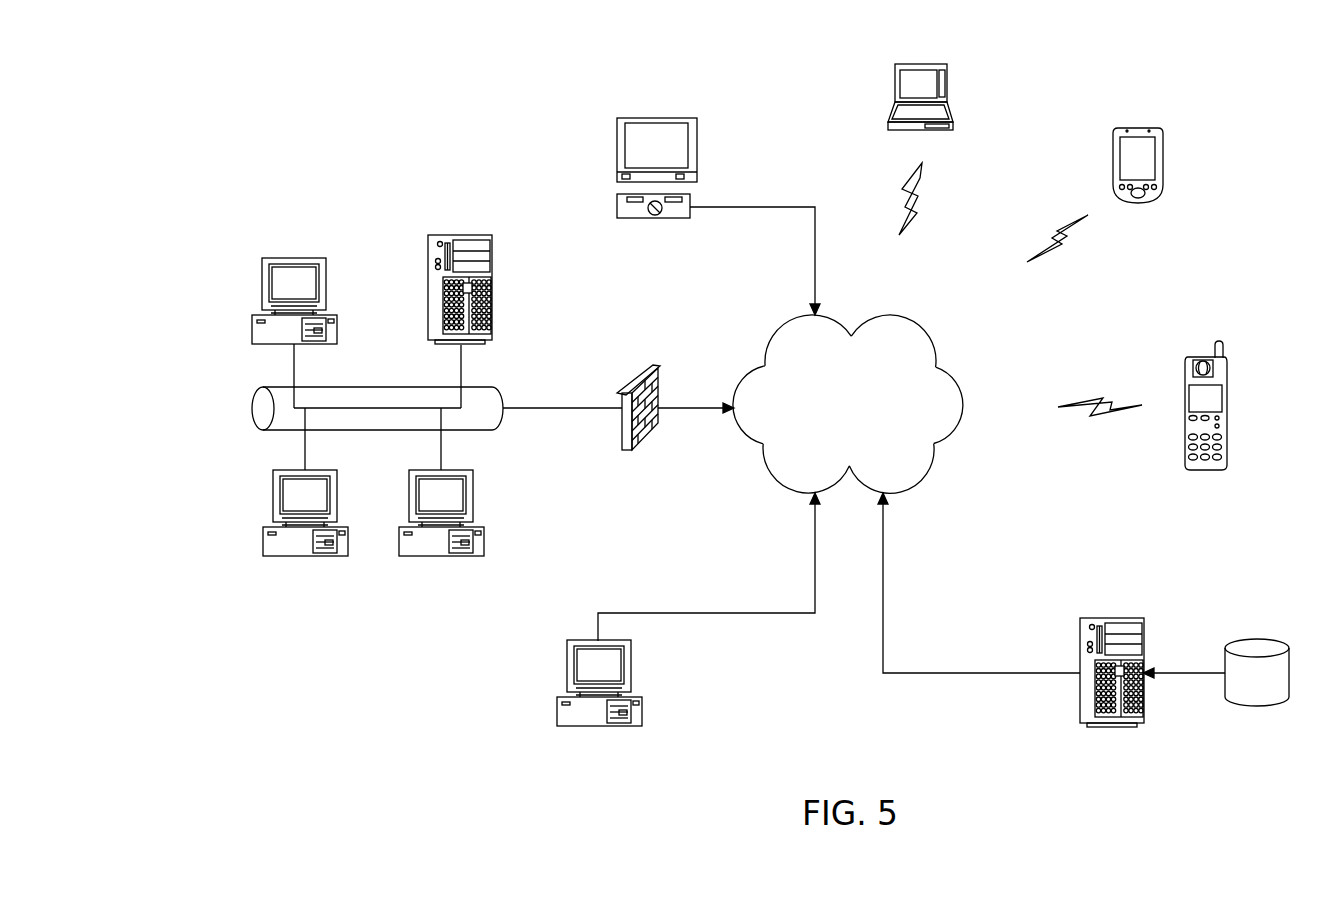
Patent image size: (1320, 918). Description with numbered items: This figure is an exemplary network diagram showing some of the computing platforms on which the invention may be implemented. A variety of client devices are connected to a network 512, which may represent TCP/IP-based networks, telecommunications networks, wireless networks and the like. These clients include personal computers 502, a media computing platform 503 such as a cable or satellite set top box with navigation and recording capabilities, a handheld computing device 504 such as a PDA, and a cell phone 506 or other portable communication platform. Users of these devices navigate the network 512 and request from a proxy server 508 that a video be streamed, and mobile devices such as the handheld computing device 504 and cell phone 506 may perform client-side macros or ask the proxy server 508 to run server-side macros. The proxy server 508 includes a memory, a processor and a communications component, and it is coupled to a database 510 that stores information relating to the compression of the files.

The personal computer 502 is at (579, 377).
The media computing platform 503 is at (629, 168).
The handheld computing device 504 is at (1110, 150).
The cell phone 506 is at (1177, 404).
The proxy server 508 is at (1100, 639).
The database 510 is at (1246, 639).
The network 512 is at (830, 393).